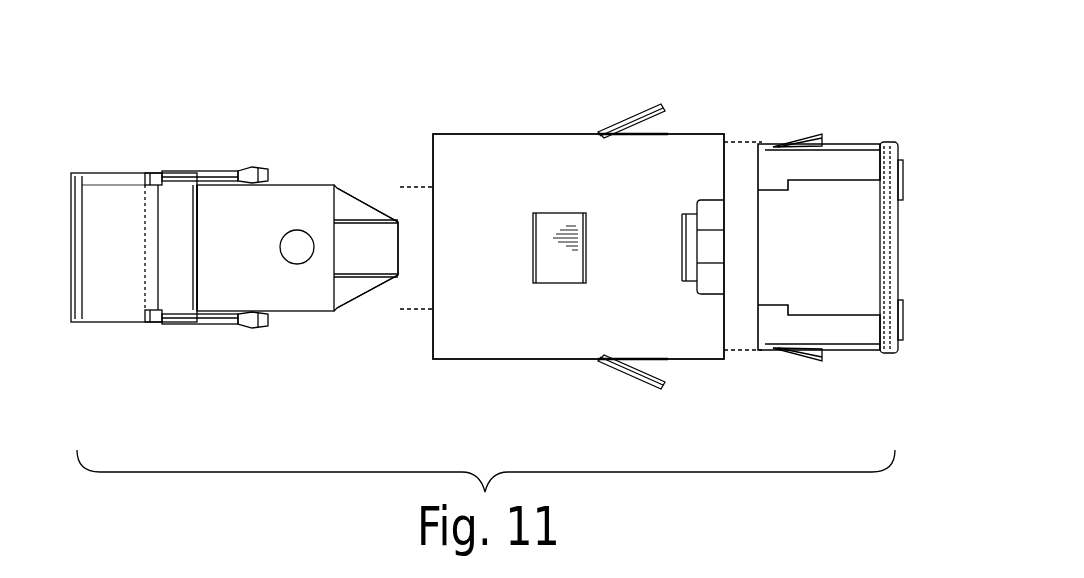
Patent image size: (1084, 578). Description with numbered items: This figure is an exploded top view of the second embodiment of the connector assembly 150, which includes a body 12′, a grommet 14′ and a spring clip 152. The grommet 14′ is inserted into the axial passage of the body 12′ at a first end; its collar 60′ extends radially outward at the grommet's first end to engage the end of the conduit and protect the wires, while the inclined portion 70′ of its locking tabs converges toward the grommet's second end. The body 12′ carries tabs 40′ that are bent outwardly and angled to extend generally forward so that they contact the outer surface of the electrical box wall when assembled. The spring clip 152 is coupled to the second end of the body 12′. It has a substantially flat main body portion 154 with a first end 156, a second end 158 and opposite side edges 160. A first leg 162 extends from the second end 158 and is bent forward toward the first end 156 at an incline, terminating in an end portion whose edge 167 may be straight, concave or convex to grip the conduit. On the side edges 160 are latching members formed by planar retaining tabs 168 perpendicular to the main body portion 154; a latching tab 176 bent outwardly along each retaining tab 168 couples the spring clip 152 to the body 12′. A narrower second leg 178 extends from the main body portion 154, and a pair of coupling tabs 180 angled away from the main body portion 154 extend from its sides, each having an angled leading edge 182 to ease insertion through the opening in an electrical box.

The connector assembly 150 is at (418, 100).
The spring clip 152 is at (295, 178).
The main body portion 154 is at (290, 291).
The first end 156 is at (345, 187).
The second end 158 is at (75, 324).
The side edges 160 is at (157, 172).
The first leg 162 is at (117, 195).
The edge 167 is at (199, 220).
The retaining tab 168 is at (205, 171).
The latching tab 176 is at (262, 168).
The second leg 178 is at (400, 262).
The coupling tabs 180 is at (355, 186).
The leading edge 182 is at (392, 187).
The body 12′ is at (510, 128).
The grommet 14′ is at (852, 136).
The tabs 40′ is at (663, 104).
The collar 60′ is at (893, 142).
The inclined portion 70′ is at (808, 134).